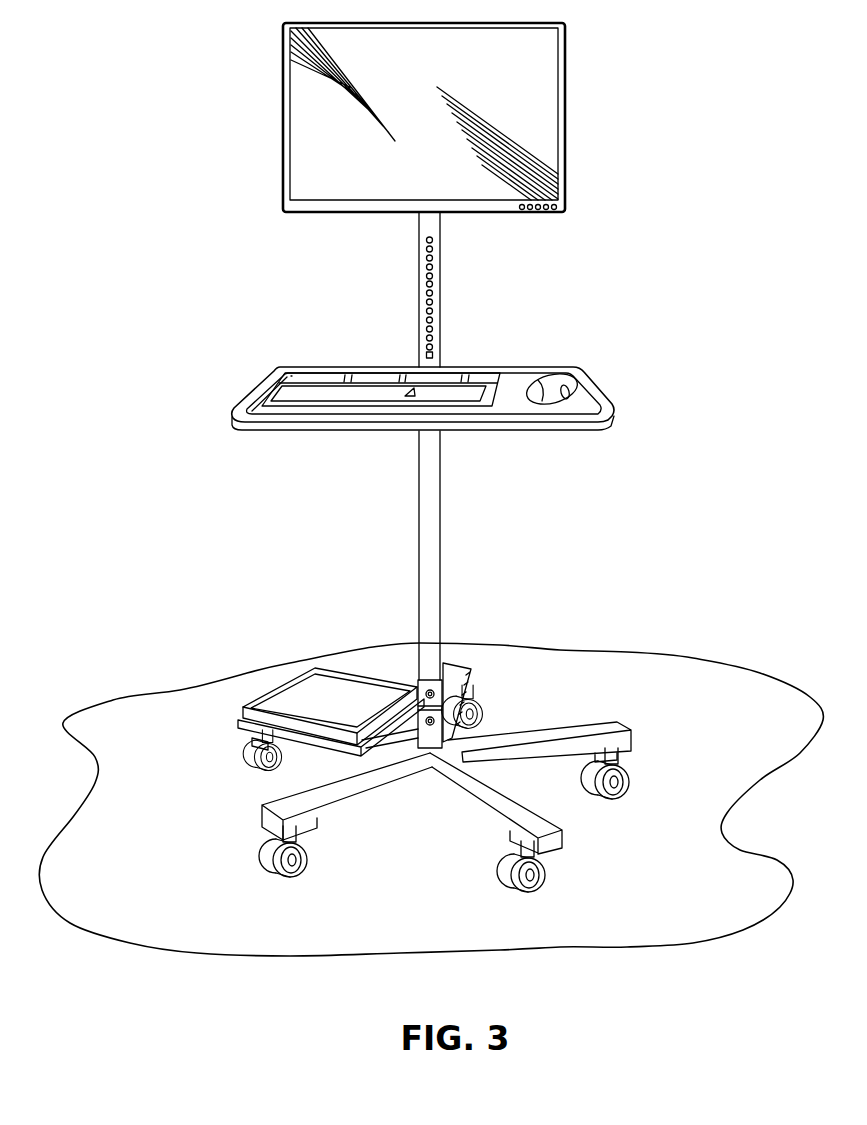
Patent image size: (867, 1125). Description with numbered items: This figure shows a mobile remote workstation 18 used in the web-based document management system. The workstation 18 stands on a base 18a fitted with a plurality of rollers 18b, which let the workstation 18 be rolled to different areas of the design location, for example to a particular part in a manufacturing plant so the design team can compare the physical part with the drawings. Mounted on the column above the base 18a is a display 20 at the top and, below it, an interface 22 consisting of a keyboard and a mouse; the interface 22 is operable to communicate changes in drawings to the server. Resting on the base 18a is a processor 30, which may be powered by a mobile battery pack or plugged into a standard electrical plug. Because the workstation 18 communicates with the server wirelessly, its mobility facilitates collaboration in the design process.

The workstation 18 is at (605, 99).
The display 20 is at (435, 117).
The interface 22 is at (483, 367).
The processor 30 is at (342, 709).
The base 18a is at (528, 728).
The rollers 18b is at (603, 858).